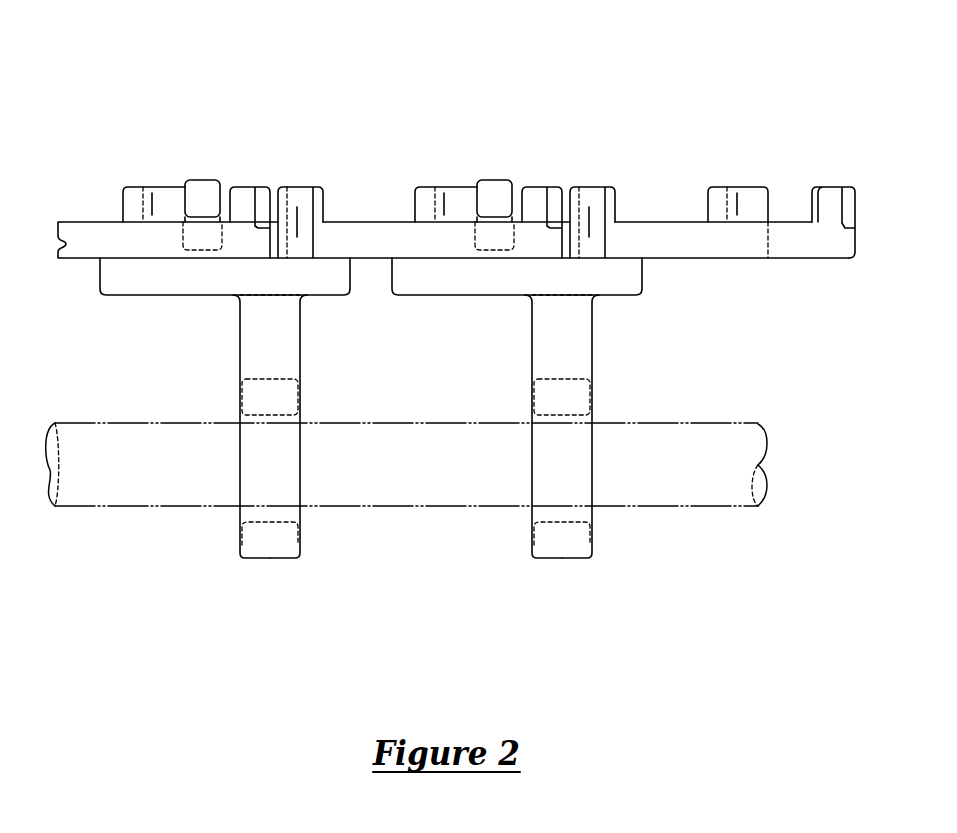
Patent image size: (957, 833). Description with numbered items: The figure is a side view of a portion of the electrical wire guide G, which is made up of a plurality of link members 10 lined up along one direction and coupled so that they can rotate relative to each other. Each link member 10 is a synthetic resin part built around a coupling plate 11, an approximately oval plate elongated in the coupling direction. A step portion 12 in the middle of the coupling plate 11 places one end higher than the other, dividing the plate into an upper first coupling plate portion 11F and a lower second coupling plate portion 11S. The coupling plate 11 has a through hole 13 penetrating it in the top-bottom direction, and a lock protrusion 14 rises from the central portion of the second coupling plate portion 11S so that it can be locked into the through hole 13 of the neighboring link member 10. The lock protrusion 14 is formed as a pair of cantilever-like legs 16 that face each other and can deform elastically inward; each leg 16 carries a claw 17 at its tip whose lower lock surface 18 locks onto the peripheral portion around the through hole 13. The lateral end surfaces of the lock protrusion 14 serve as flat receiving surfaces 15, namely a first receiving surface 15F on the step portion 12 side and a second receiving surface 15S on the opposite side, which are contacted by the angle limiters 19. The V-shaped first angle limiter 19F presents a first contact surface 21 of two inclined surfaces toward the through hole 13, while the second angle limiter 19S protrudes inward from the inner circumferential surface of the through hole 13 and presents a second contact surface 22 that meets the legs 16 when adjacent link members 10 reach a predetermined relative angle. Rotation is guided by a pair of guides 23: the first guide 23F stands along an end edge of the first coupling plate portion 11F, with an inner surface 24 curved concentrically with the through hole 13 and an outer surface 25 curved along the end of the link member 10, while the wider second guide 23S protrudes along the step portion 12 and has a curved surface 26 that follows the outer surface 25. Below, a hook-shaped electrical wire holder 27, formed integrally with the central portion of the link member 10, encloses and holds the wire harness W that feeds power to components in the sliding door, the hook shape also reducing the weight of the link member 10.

The link member 10 is at (658, 238).
The coupling plate 11 is at (592, 449).
The first coupling plate portion 11F is at (533, 450).
The second coupling plate portion 11S is at (624, 430).
The step portion 12 is at (323, 235).
The through hole 13 is at (531, 196).
The lock protrusion 14 is at (495, 163).
The receiving surface 15 is at (493, 132).
The first receiving surface 15F is at (464, 134).
The second receiving surface 15S is at (489, 151).
The leg 16 is at (210, 237).
The claw 17 is at (200, 187).
The lock surface 18 is at (197, 218).
The angle limiter 19 is at (164, 296).
The first angle limiter 19F is at (158, 213).
The second angle limiter 19S is at (228, 240).
The first contact surface 21 is at (452, 172).
The second contact surface 22 is at (517, 418).
The guide 23 is at (264, 431).
The first guide 23F is at (247, 207).
The second guide 23S is at (297, 212).
The inner surface 24 is at (228, 207).
The outer surface 25 is at (267, 202).
The curved surface 26 is at (591, 185).
The electrical wire holder 27 is at (298, 553).
The electrical wire guide G is at (805, 172).
The wire harness W is at (703, 495).